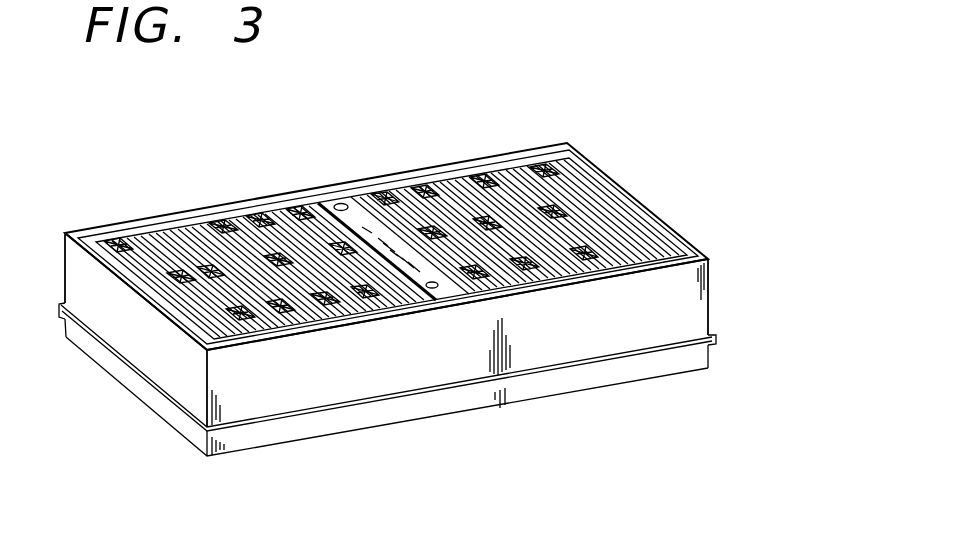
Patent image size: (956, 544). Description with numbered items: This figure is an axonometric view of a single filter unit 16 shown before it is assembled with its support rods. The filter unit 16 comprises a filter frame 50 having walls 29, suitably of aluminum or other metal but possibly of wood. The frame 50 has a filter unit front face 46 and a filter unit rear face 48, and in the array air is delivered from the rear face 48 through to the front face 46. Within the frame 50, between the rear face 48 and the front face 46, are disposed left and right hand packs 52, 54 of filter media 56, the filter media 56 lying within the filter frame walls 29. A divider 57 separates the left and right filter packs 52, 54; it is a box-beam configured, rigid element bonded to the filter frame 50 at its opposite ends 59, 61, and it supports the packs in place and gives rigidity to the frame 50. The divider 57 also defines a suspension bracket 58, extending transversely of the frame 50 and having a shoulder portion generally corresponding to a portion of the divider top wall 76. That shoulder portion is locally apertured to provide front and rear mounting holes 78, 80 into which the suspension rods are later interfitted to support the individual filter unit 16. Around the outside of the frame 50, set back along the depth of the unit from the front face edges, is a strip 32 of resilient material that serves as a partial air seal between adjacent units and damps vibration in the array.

The filter unit 16 is at (647, 167).
The filter unit wall 29 is at (137, 342).
The strip 32 is at (663, 353).
The filter unit front face 46 is at (253, 452).
The filter unit rear face 48 is at (128, 253).
The filter frame 50 is at (378, 352).
The left hand pack 52 is at (267, 255).
The right hand pack 54 is at (647, 242).
The filter media 56 is at (523, 210).
The divider 57 is at (423, 273).
The suspension bracket 58 is at (381, 233).
The divider end 59 is at (323, 197).
The divider end 61 is at (452, 308).
The divider top wall 76 is at (412, 268).
The front mounting hole 78 is at (433, 283).
The rear mounting hole 80 is at (345, 205).